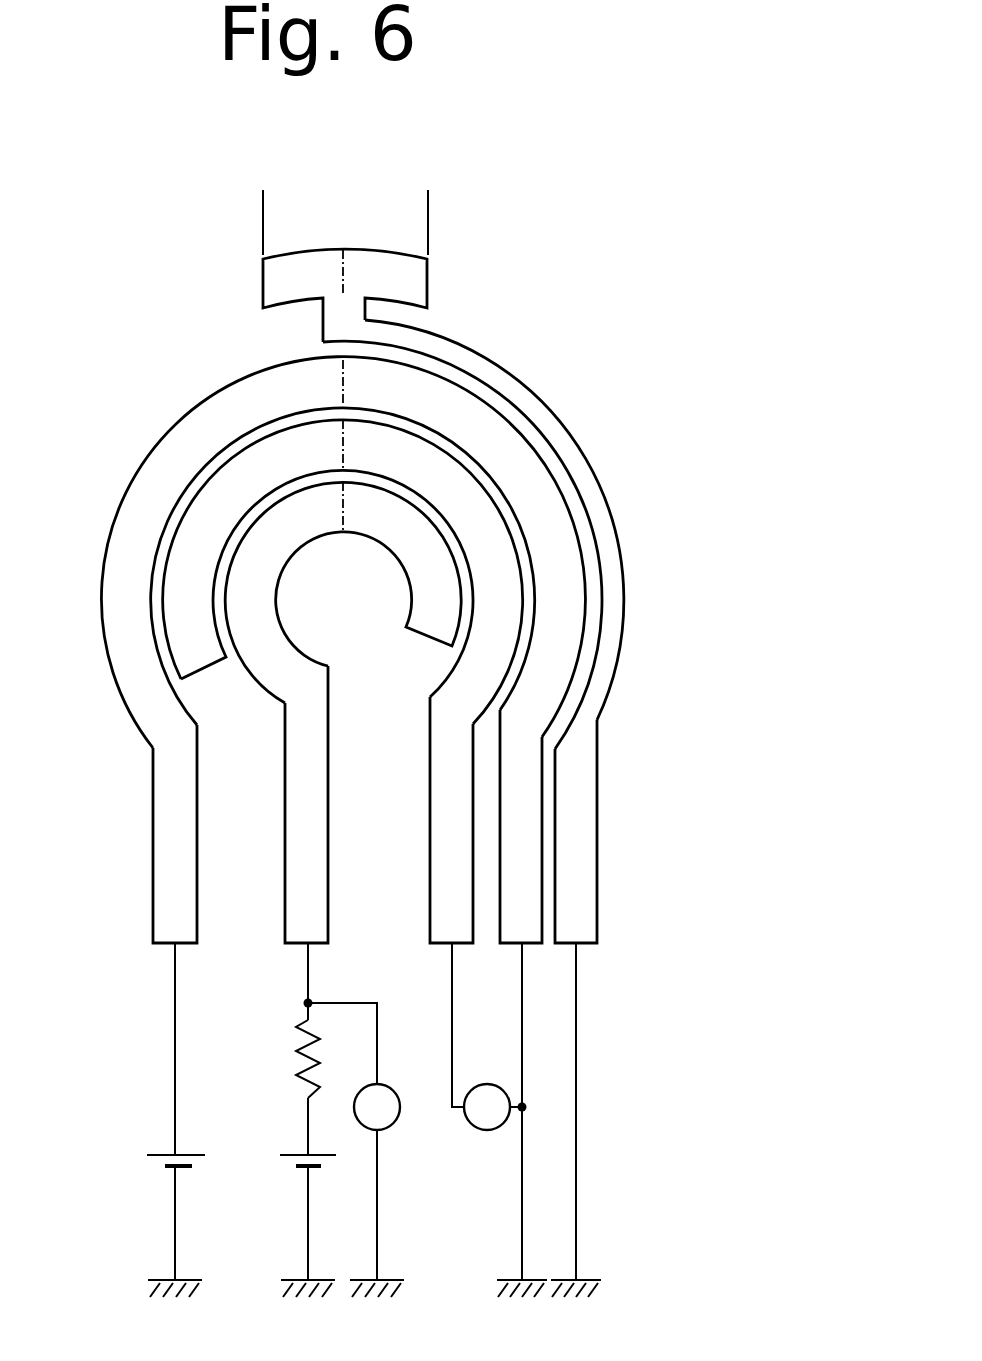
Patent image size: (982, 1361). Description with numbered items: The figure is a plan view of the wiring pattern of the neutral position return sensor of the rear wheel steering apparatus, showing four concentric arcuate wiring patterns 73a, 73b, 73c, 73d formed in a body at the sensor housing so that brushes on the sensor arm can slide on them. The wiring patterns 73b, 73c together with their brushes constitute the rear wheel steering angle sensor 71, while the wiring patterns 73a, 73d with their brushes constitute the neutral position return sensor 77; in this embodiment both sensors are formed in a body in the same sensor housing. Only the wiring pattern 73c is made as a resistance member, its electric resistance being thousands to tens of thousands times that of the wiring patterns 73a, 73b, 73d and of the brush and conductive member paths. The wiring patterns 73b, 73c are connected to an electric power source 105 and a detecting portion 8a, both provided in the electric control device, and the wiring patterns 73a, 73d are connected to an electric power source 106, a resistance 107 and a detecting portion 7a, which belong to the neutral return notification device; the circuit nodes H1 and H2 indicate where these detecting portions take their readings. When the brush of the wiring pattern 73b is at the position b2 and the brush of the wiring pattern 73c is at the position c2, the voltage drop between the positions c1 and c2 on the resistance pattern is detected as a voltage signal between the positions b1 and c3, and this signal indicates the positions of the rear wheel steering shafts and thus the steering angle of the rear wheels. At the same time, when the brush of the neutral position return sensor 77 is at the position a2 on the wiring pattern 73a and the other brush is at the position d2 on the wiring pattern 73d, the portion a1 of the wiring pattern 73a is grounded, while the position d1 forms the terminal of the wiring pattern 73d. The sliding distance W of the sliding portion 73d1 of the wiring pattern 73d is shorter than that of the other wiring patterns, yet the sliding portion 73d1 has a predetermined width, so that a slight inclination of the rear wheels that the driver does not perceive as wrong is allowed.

The sliding distance W is at (428, 203).
The rear wheel steering angle sensor 71 is at (458, 827).
The neutral position return sensor 77 is at (516, 773).
The wiring pattern 73a is at (477, 751).
The wiring pattern 73b is at (465, 763).
The wiring pattern 73c is at (417, 827).
The wiring pattern 73d is at (526, 808).
The sliding portion 73d1 is at (452, 295).
The portion a1 is at (306, 946).
The position b1 is at (451, 945).
The position c1 is at (173, 944).
The position c3 is at (524, 944).
The position d1 is at (574, 944).
The position a2 is at (374, 509).
The position b2 is at (374, 446).
The position c2 is at (373, 383).
The position d2 is at (376, 277).
The first output node H1 is at (452, 1043).
The second output node H2 is at (312, 975).
The electric power source 105 is at (173, 1171).
The electric power source 106 is at (303, 1170).
The resistance 107 is at (297, 1070).
The detecting portion 7a is at (392, 1124).
The detecting portion 8a is at (487, 1131).